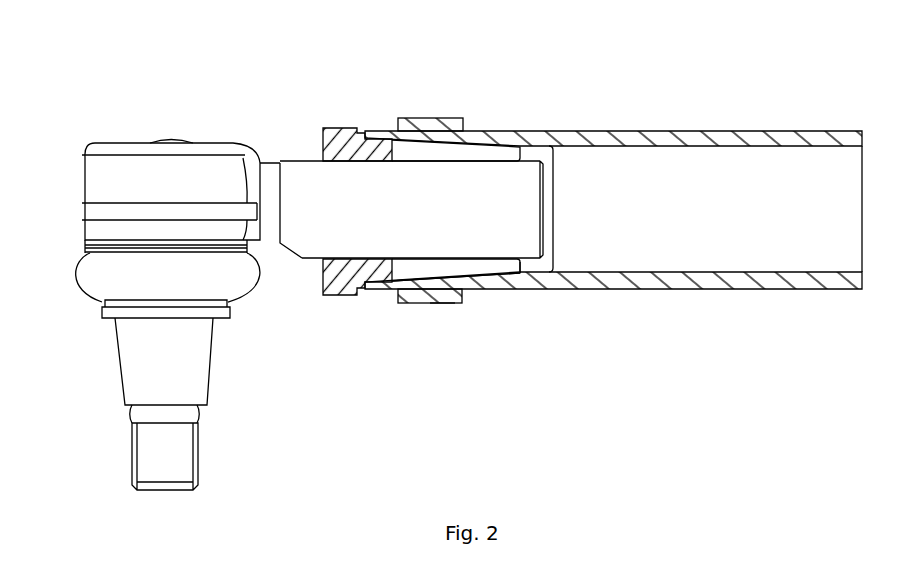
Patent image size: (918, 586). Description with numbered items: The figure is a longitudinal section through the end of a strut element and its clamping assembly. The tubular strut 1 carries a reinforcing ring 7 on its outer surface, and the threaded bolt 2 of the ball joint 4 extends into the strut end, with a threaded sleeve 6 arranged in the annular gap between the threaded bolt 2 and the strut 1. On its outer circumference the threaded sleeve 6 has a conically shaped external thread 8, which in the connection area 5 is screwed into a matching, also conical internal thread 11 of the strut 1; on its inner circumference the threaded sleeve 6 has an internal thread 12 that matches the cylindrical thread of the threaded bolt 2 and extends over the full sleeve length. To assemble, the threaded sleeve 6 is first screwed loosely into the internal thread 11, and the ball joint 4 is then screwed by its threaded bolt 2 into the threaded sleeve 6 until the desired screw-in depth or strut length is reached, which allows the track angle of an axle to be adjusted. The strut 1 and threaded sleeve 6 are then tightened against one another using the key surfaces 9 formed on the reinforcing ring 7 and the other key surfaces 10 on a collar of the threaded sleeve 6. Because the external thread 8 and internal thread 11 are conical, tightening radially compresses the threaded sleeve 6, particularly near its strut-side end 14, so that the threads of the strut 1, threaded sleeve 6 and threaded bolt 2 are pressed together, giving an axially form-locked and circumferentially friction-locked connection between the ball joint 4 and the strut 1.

The strut 1 is at (727, 136).
The threaded bolt 2 is at (308, 188).
The ball joint 4 is at (120, 108).
The connection area 5 is at (553, 100).
The threaded sleeve 6 is at (347, 278).
The reinforcing ring 7 is at (414, 297).
The external thread 8 is at (503, 277).
The key surfaces 9 is at (442, 312).
The key surfaces 10 is at (340, 118).
The internal thread 11 is at (487, 338).
The internal thread 12 is at (484, 259).
The end 14 is at (534, 268).